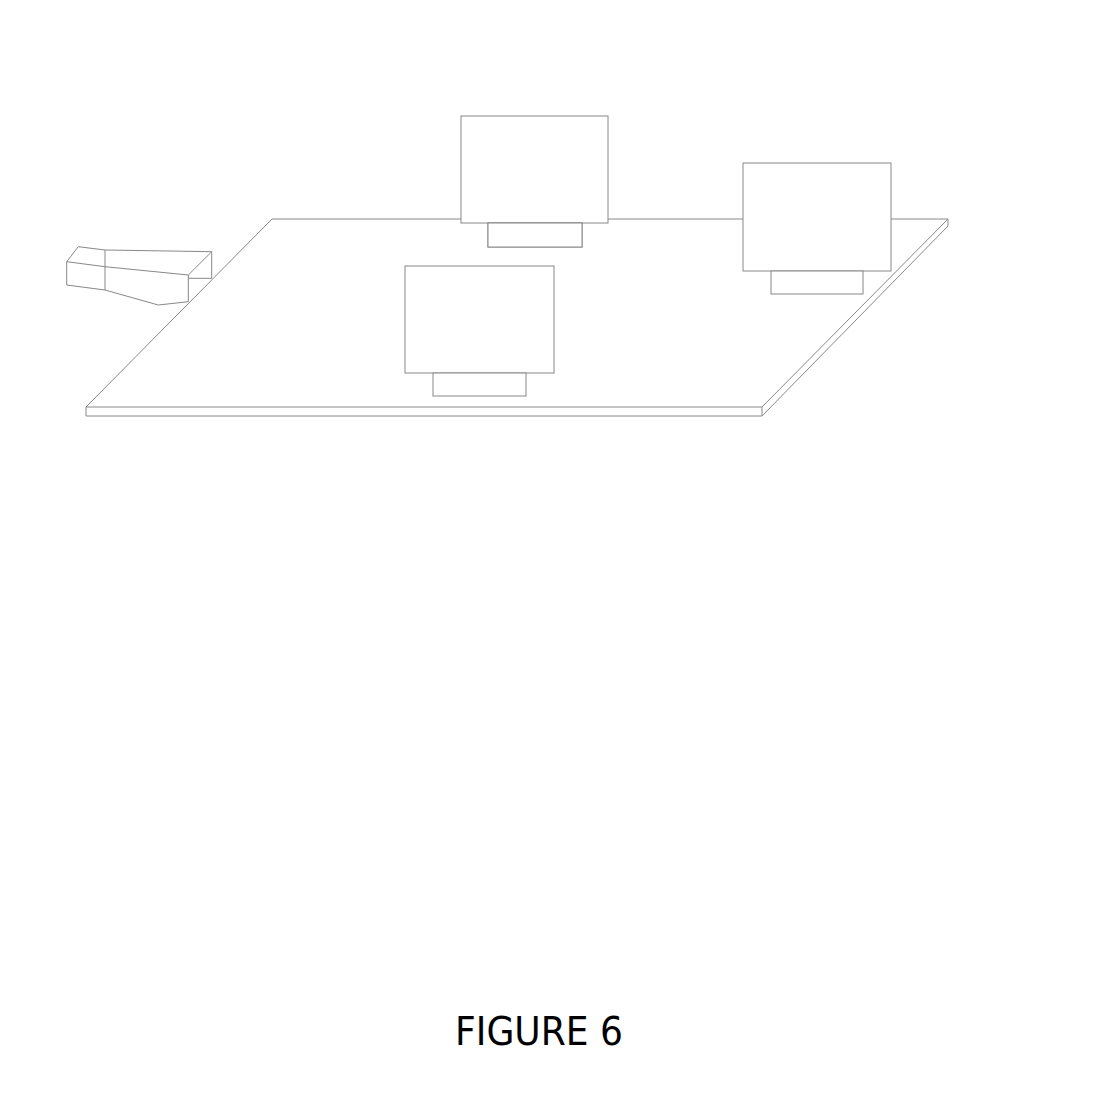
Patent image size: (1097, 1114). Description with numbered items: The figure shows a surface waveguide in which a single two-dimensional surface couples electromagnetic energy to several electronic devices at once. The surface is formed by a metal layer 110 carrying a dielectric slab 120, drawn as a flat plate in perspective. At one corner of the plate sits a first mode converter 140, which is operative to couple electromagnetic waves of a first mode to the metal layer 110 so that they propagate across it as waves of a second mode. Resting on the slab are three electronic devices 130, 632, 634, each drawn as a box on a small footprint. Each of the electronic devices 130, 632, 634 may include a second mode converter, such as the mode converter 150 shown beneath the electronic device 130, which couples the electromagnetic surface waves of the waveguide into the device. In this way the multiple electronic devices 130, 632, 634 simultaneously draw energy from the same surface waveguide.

The metal layer 110 is at (582, 433).
The dielectric slab 120 is at (344, 227).
The electronic device 130 is at (534, 181).
The first mode converter 140 is at (112, 245).
The second mode converter 150 is at (598, 234).
The electronic device 632 is at (479, 331).
The electronic device 634 is at (817, 228).